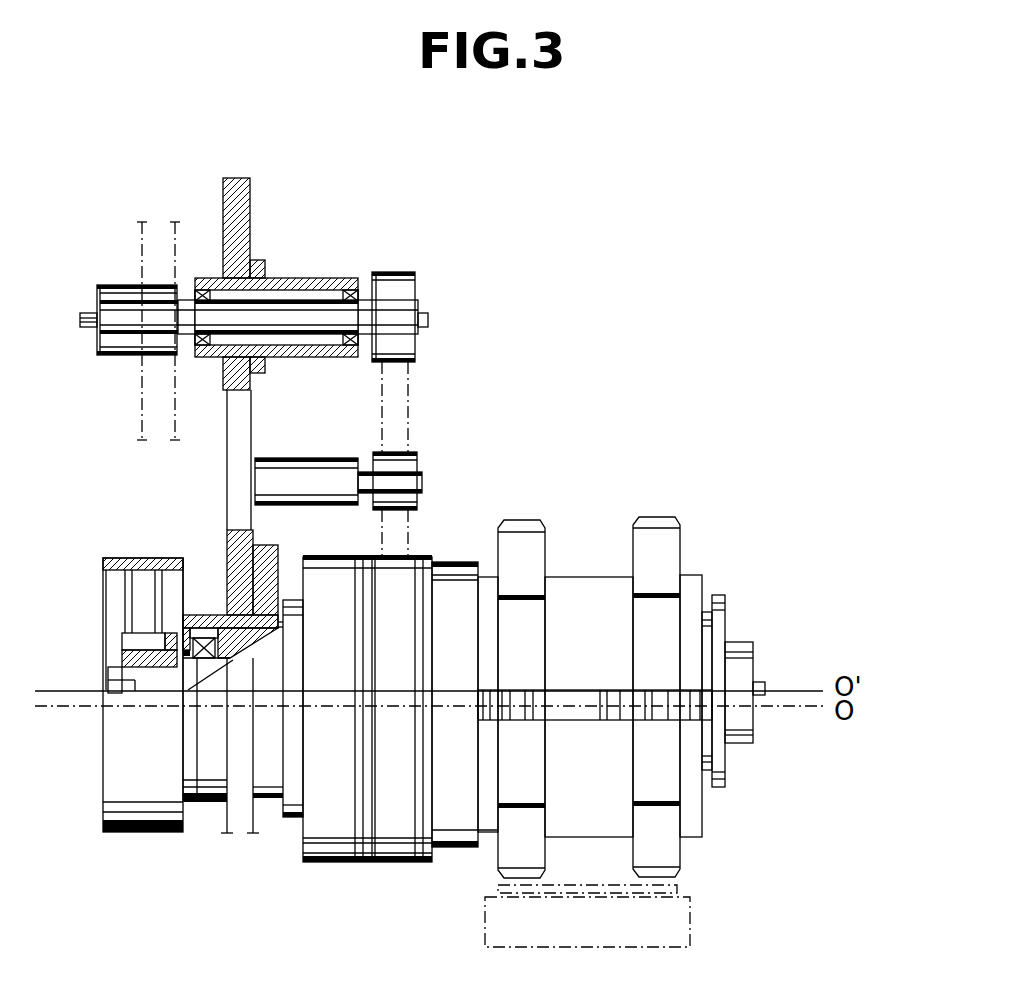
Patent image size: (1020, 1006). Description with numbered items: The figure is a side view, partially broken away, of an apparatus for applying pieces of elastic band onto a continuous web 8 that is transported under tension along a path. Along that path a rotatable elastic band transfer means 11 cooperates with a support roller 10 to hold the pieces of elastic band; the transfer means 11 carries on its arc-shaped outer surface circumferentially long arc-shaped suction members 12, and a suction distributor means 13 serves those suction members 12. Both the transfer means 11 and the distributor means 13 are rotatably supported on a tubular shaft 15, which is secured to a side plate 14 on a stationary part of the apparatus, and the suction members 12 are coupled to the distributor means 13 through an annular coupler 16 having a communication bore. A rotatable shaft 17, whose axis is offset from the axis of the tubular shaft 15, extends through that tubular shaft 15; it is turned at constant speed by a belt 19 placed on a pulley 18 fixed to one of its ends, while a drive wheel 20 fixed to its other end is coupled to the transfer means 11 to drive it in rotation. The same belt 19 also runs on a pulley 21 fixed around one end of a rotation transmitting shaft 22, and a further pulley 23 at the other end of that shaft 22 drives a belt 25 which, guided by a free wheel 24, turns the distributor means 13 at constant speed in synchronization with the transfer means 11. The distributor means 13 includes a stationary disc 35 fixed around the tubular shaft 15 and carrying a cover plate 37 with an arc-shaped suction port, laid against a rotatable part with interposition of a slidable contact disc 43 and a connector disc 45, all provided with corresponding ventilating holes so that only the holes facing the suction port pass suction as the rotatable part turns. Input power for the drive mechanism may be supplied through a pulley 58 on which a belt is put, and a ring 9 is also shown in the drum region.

The continuous web 8 is at (677, 885).
The drum 9 is at (397, 862).
The support roller 10 is at (690, 935).
The elastic band transfer means 11 is at (587, 566).
The suction members 12 is at (520, 508).
The suction distributor means 13 is at (366, 543).
The side plate 14 is at (245, 562).
The tubular shaft 15 is at (228, 615).
The annular coupler 16 is at (455, 562).
The rotatable shaft 17 is at (228, 660).
The pulley 18 is at (143, 832).
The belt 19 is at (158, 403).
The drive wheel 20 is at (718, 595).
The pulley 21 is at (153, 283).
The rotation transmitting shaft 22 is at (293, 315).
The pulley 23 is at (393, 285).
The free wheel 24 is at (418, 452).
The belt 25 is at (398, 405).
The stationary disc 35 is at (308, 862).
The cover plate 37 is at (355, 862).
The slidable contact disc 43 is at (367, 862).
The connector disc 45 is at (425, 847).
The pulley 58 is at (83, 310).